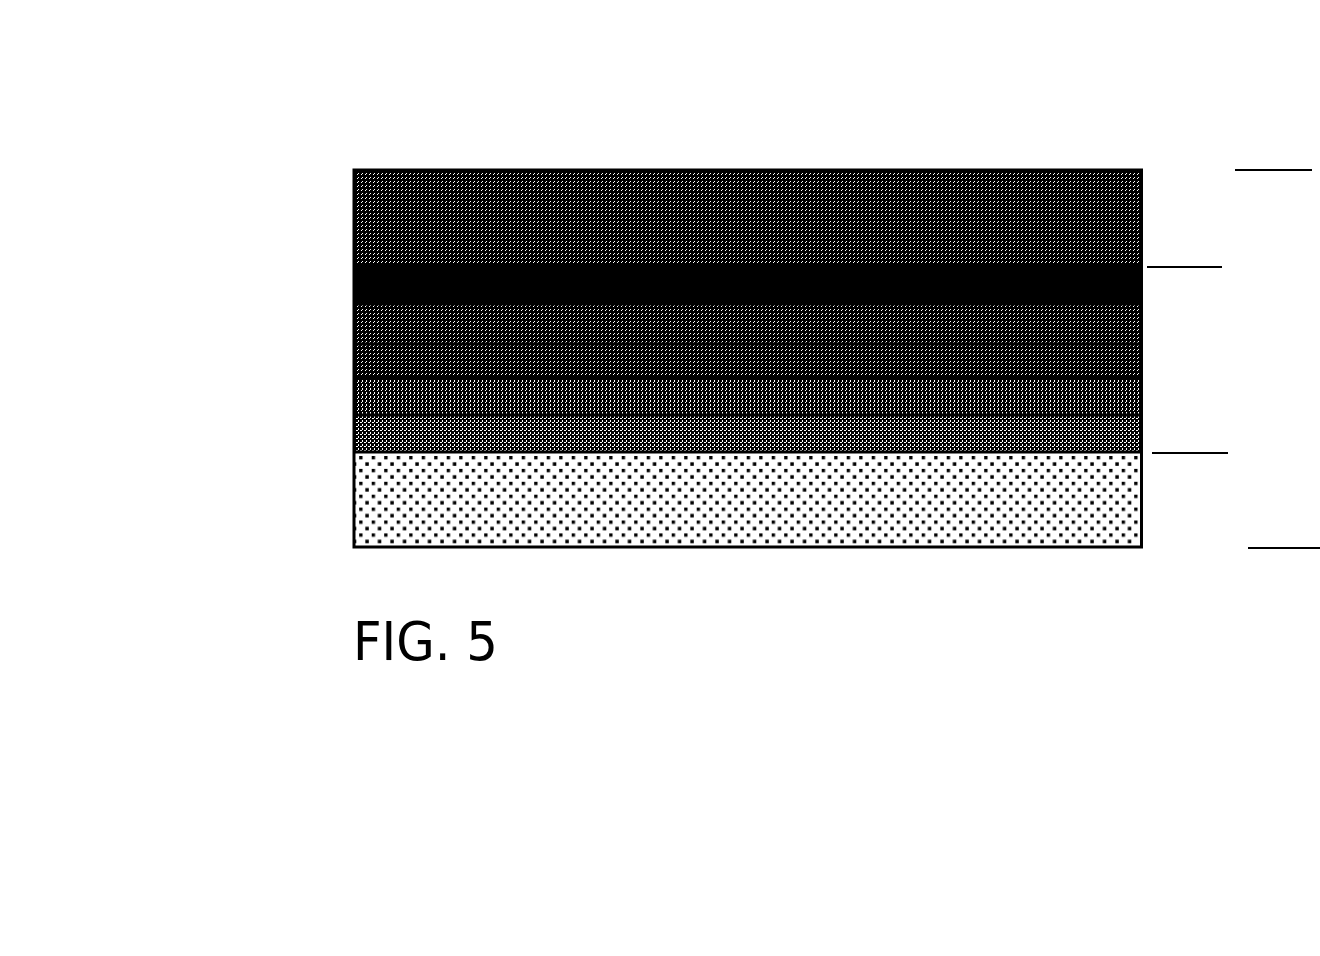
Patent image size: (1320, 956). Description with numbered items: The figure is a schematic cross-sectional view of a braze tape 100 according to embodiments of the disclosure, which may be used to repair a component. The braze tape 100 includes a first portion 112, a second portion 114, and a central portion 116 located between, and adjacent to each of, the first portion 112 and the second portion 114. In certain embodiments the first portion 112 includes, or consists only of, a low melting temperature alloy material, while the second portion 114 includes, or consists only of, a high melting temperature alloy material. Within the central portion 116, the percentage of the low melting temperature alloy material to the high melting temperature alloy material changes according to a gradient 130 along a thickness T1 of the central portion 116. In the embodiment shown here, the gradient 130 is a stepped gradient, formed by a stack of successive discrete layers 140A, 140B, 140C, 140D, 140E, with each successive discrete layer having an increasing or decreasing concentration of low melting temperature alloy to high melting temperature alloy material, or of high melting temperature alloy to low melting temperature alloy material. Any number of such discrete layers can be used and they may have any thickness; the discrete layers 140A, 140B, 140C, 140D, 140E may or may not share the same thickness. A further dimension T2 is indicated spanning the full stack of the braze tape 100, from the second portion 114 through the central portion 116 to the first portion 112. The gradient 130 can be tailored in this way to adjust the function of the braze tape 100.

The braze tape 100 is at (337, 159).
The first portion 112 is at (524, 495).
The second portion 114 is at (555, 210).
The central portion 116 is at (653, 428).
The gradient 130 is at (163, 265).
The discrete layer 140A is at (333, 276).
The discrete layer 140B is at (333, 311).
The discrete layer 140C is at (333, 349).
The discrete layer 140D is at (333, 388).
The discrete layer 140E is at (333, 426).
The thickness of central portion T1 is at (1195, 436).
The total thickness of multilayer structure T2 is at (1287, 530).